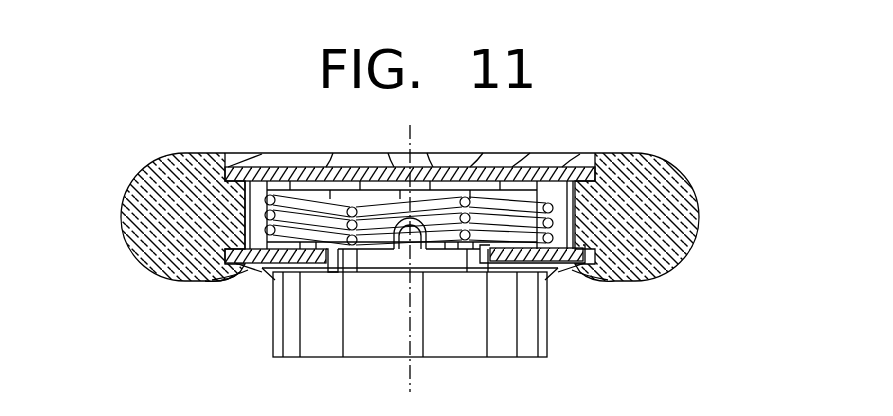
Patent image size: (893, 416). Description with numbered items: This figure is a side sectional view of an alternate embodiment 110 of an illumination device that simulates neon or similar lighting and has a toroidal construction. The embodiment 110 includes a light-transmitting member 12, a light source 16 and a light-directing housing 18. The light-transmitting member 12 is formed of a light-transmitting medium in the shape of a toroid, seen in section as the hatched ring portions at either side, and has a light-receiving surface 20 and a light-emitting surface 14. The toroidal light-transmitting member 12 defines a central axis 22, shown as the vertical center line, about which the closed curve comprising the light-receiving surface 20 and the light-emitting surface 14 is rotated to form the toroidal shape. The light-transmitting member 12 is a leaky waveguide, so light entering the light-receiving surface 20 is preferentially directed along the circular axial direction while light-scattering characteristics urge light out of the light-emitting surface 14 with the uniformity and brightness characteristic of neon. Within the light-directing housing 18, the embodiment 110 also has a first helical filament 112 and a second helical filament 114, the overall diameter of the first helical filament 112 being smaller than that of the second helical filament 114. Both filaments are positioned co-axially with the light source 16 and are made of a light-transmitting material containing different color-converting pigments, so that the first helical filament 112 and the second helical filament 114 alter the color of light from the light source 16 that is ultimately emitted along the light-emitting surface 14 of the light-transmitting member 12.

The embodiment 110 is at (125, 96).
The light-transmitting member 12 is at (687, 178).
The light-emitting surface 14 is at (700, 218).
The light source 16 is at (369, 236).
The light-directing housing 18 is at (527, 177).
The light-receiving surface 20 is at (580, 192).
The central axis 22 is at (412, 367).
The first helical filament 112 is at (343, 273).
The second helical filament 114 is at (288, 212).